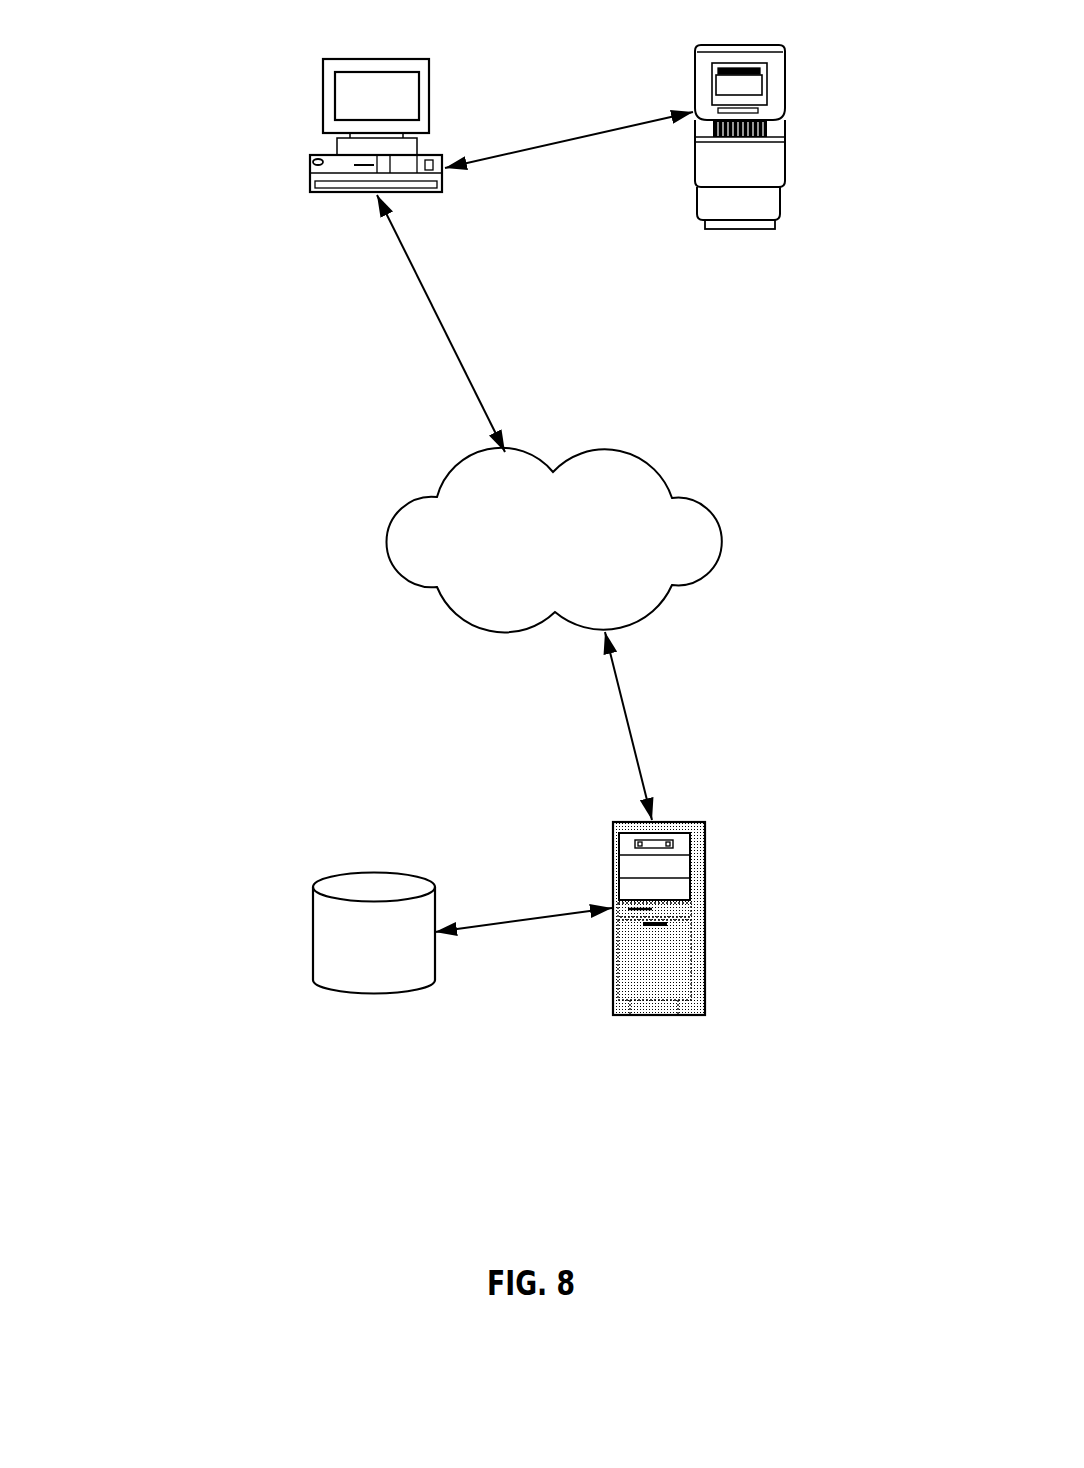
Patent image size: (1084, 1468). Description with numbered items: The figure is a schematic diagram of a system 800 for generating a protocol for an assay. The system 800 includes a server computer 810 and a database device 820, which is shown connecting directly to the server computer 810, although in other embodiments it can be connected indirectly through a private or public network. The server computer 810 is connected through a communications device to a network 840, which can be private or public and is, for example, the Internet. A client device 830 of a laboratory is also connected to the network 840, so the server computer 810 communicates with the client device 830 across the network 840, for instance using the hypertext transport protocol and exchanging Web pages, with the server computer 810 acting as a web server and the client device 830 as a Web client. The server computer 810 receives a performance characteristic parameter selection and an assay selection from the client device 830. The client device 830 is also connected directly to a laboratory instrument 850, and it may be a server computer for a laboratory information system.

The system 800 is at (392, 1063).
The server computer 810 is at (706, 907).
The database device 820 is at (313, 932).
The client device 830 is at (310, 168).
The network 840 is at (387, 542).
The laboratory instrument 850 is at (758, 228).